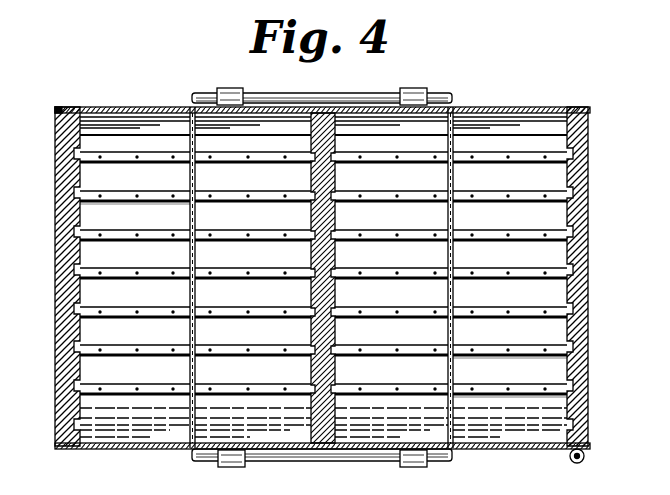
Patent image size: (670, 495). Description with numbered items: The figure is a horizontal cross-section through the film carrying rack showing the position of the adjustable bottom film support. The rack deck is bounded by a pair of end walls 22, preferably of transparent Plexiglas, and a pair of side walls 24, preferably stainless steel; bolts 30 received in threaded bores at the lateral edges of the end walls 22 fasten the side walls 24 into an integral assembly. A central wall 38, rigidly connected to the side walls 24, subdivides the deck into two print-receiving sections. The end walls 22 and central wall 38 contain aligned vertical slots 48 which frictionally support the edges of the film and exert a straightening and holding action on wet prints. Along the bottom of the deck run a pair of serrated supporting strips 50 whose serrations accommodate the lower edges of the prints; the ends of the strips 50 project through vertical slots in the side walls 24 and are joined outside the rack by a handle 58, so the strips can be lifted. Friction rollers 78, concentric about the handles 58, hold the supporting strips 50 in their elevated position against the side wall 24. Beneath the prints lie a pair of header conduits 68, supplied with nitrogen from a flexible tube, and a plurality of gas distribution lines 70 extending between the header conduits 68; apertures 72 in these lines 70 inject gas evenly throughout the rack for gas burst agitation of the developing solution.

The end walls 22 is at (56, 209).
The side walls 24 is at (138, 107).
The bolts 30 is at (66, 107).
The central wall 38 is at (312, 250).
The slots 48 is at (84, 178).
The supporting strips 50 is at (196, 184).
The handle 58 is at (366, 79).
The header conduits 68 is at (586, 456).
The gas distribution lines 70 is at (162, 202).
The apertures 72 is at (508, 352).
The friction rollers 78 is at (240, 76).